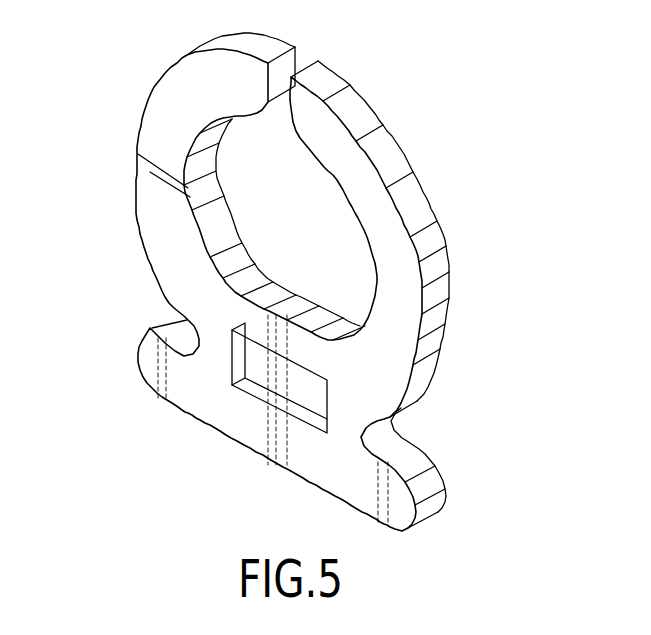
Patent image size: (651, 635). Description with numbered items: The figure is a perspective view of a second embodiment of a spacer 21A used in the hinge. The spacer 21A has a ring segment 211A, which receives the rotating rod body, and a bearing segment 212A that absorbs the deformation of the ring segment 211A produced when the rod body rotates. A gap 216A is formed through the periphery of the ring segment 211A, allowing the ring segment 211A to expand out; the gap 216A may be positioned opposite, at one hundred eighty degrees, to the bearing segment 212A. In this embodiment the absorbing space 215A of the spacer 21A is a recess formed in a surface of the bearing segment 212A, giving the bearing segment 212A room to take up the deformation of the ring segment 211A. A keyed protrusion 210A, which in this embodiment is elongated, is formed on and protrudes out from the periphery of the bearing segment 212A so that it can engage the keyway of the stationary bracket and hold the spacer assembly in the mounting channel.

The spacer 21A is at (93, 53).
The keyed protrusion 210A is at (118, 368).
The ring segment 211A is at (366, 231).
The bearing segment 212A is at (458, 455).
The absorbing space 215A is at (233, 401).
The gap 216A is at (332, 56).